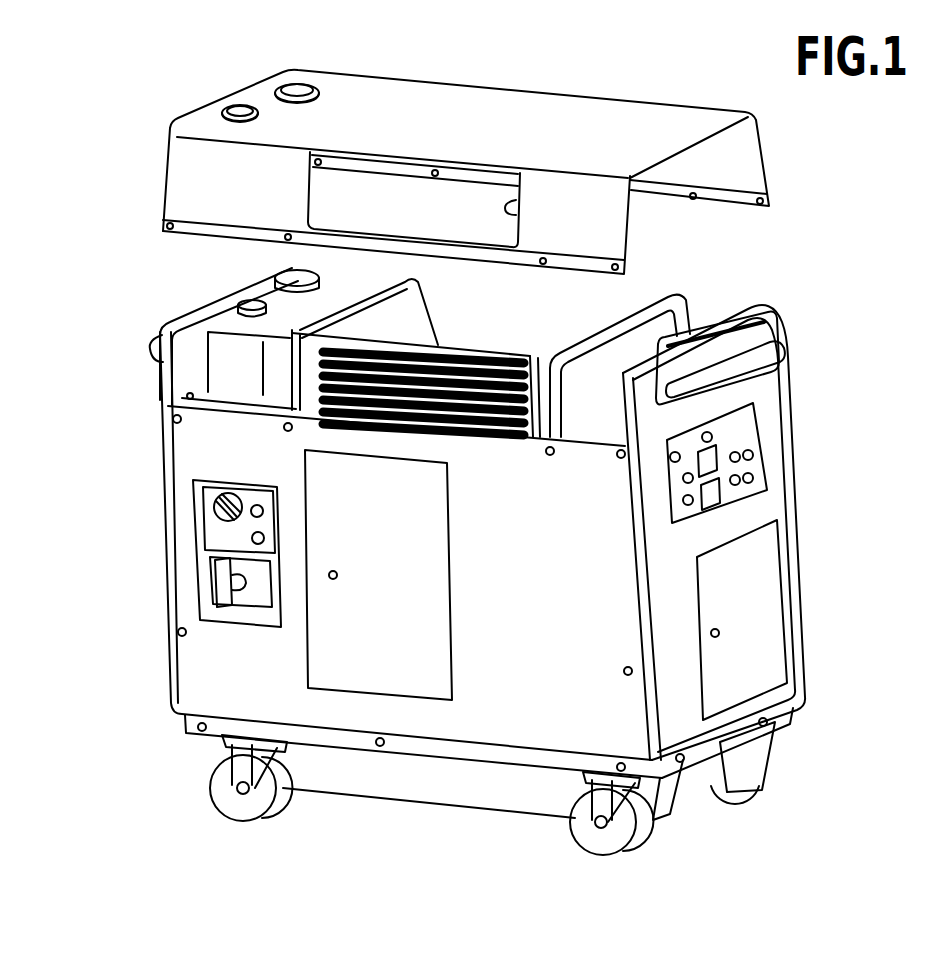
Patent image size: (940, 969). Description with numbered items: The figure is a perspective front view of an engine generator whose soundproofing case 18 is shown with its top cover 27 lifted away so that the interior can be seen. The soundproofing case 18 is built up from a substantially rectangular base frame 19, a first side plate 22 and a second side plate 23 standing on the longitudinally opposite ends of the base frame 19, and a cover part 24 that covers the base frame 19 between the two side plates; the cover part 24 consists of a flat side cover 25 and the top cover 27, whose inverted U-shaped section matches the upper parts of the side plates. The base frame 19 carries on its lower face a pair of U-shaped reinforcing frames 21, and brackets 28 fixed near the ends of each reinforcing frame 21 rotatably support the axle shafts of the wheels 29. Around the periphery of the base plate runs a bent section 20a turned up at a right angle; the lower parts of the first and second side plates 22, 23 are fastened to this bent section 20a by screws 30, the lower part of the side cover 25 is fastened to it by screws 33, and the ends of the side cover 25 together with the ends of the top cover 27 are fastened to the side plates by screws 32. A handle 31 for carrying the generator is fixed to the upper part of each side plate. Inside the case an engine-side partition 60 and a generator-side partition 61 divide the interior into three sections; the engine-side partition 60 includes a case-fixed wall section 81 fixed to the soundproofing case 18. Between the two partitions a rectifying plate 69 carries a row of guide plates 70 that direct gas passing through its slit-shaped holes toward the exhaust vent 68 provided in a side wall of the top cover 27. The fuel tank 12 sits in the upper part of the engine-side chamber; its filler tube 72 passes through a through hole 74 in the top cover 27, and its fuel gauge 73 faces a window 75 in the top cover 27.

The fuel tank 12 is at (215, 322).
The soundproofing case 18 is at (800, 553).
The base frame 19 is at (365, 811).
The bent section 20a is at (478, 742).
The reinforcing frame 21 is at (765, 740).
The first side plate 22 is at (157, 388).
The second side plate 23 is at (782, 487).
The cover part 24 is at (438, 752).
The side cover 25 is at (187, 455).
The top cover 27 is at (620, 117).
The bracket 28 is at (248, 755).
The wheel 29 is at (225, 785).
The screw 30 is at (703, 755).
The handle 31 is at (150, 345).
The screw 32 is at (181, 423).
The screw 33 is at (198, 729).
The engine-side partition 60 is at (424, 310).
The generator-side partition 61 is at (700, 290).
The exhaust vent 68 is at (516, 208).
The rectifying plate 69 is at (535, 372).
The guide plate 70 is at (453, 377).
The filler tube 72 is at (293, 270).
The fuel gauge 73 is at (250, 301).
The through hole 74 is at (290, 92).
The window 75 is at (225, 105).
The case-fixed wall section 81 is at (438, 300).